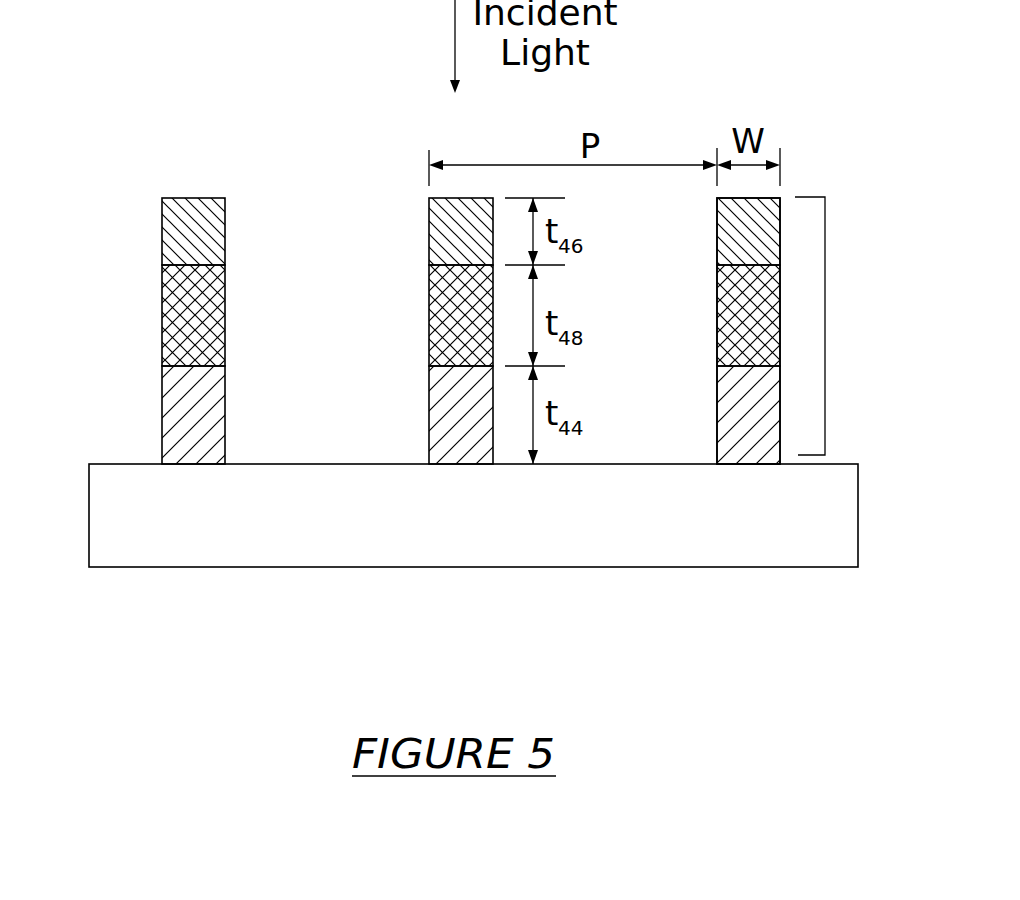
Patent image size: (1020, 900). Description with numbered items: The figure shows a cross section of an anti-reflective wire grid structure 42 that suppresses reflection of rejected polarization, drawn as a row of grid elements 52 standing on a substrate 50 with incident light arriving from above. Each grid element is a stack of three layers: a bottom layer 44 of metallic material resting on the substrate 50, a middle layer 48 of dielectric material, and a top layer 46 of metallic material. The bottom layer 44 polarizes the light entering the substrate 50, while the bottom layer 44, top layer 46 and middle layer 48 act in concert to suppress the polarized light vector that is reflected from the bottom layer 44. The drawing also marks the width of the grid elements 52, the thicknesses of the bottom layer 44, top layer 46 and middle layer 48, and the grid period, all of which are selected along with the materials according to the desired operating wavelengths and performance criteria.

The anti-reflective wire grid structure 42 is at (825, 318).
The bottom layer 44 is at (177, 397).
The top layer 46 is at (180, 237).
The middle layer 48 is at (180, 315).
The substrate 50 is at (467, 550).
The grid elements 52 is at (327, 196).